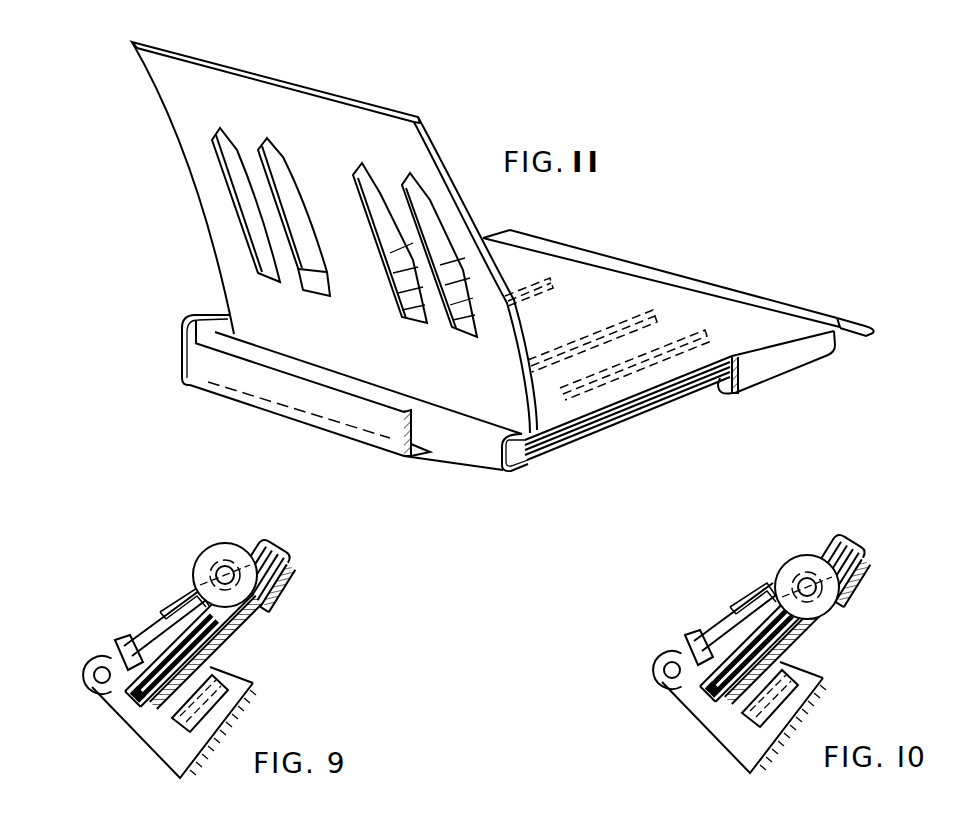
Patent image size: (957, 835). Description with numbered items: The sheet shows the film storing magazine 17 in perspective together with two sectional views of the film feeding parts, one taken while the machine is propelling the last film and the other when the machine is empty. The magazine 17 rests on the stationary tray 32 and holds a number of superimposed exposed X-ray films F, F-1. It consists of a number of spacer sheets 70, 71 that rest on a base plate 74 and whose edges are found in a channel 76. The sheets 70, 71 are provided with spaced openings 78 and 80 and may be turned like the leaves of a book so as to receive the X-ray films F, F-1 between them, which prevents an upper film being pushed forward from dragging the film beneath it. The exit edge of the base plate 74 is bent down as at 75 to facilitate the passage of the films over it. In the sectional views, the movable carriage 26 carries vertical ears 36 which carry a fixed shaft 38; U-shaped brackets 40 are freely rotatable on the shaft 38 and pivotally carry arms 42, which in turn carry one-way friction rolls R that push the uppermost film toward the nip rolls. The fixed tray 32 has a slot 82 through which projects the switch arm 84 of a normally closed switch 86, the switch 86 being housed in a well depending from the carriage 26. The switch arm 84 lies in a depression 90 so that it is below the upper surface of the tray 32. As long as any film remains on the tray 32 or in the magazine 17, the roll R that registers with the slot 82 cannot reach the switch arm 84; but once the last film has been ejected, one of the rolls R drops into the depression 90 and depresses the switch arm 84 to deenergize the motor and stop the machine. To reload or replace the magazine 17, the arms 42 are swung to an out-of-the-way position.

In FIG. 11, the film storing magazine 17 is at (198, 313).
In FIG. 9, the movable carriage 26 is at (244, 683).
In FIG. 10, the movable carriage 26 is at (814, 681).
In FIG. 11, the stationary tray 32 is at (207, 385).
In FIG. 9, the stationary tray 32 is at (152, 722).
In FIG. 10, the stationary tray 32 is at (711, 718).
In FIG. 9, the vertical ears 36 is at (108, 700).
In FIG. 10, the vertical ears 36 is at (678, 693).
In FIG. 9, the fixed shaft 38 is at (96, 668).
In FIG. 10, the fixed shaft 38 is at (666, 664).
In FIG. 9, the U-shaped brackets 40 is at (114, 644).
In FIG. 10, the U-shaped brackets 40 is at (688, 645).
In FIG. 9, the arms 42 is at (152, 630).
In FIG. 10, the arms 42 is at (729, 631).
In FIG. 11, the spacer sheet 70 is at (369, 107).
In FIG. 9, the spacer sheet 70 is at (267, 553).
In FIG. 10, the spacer sheet 70 is at (840, 543).
In FIG. 11, the spacer sheet 71 is at (553, 243).
In FIG. 9, the spacer sheet 71 is at (280, 548).
In FIG. 10, the spacer sheet 71 is at (857, 538).
In FIG. 11, the base plate 74 is at (575, 447).
In FIG. 9, the base plate 74 is at (289, 573).
In FIG. 10, the base plate 74 is at (867, 553).
In FIG. 11, the bent-down exit edge 75 is at (866, 331).
In FIG. 11, the channel 76 is at (460, 456).
In FIG. 11, the openings 78 is at (226, 179).
In FIG. 11, the openings 80 is at (397, 296).
In FIG. 9, the slot 82 is at (289, 587).
In FIG. 10, the slot 82 is at (861, 581).
In FIG. 9, the switch arm 84 is at (288, 591).
In FIG. 10, the switch arm 84 is at (864, 591).
In FIG. 9, the normally closed switch 86 is at (200, 722).
In FIG. 10, the normally closed switch 86 is at (768, 722).
In FIG. 9, the depression 90 is at (251, 629).
In FIG. 10, the depression 90 is at (828, 634).
In FIG. 11, the X-ray film F is at (645, 277).
In FIG. 11, the X-ray film F-1 is at (640, 413).
In FIG. 9, the X-ray film F-1 is at (287, 554).
In FIG. 9, the one-way friction rolls R is at (203, 552).
In FIG. 10, the one-way friction rolls R is at (793, 563).